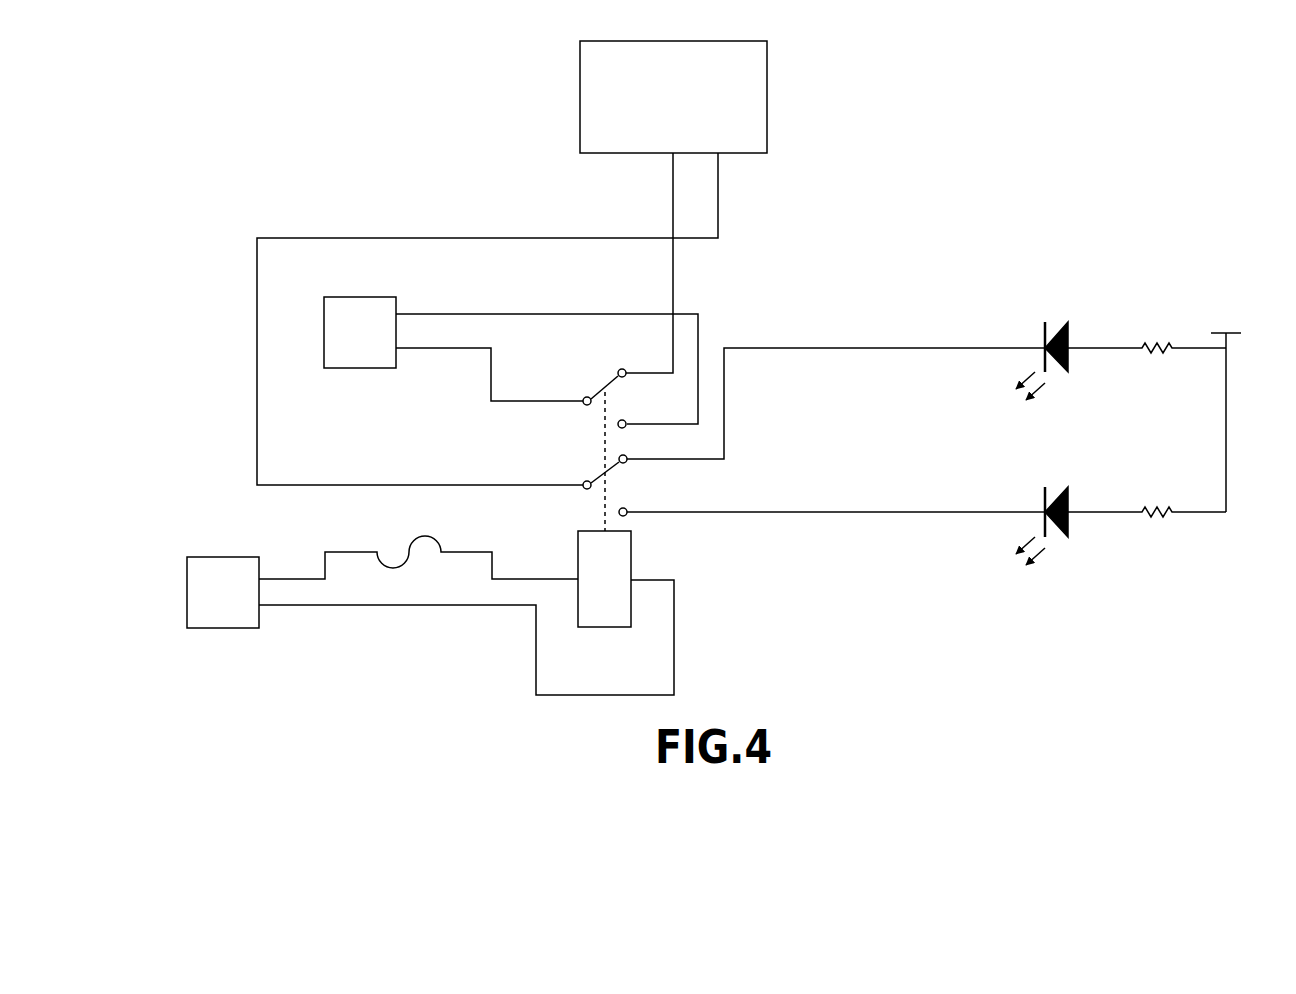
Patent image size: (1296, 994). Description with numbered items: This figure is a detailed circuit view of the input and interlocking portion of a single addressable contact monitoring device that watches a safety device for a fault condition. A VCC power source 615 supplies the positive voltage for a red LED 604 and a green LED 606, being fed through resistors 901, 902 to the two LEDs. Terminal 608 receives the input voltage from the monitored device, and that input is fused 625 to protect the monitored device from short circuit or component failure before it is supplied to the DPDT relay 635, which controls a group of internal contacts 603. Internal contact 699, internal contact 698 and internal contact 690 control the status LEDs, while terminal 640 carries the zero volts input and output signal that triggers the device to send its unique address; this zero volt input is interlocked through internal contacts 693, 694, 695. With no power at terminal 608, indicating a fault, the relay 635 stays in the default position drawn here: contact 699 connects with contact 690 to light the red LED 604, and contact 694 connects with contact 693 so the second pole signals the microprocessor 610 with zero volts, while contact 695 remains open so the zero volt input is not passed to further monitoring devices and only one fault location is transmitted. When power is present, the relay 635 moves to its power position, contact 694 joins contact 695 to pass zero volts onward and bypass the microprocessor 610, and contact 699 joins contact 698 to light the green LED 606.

The microprocessor 610 is at (580, 98).
The terminal 640 is at (324, 330).
The internal contact 5 695 is at (490, 314).
The internal contact 4 694 is at (511, 401).
The group of internal contacts 603 is at (606, 352).
The internal contact 3 693 is at (673, 262).
The internal contact 10 690 is at (724, 403).
The internal contact 9 699 is at (508, 485).
The DPDT relay 635 is at (631, 543).
The internal contact 8 698 is at (830, 513).
The terminal 608 is at (187, 590).
The fuse 625 is at (368, 562).
The red LED 604 is at (1068, 335).
The resistor 901 is at (1157, 352).
The VCC power source 615 is at (1235, 335).
The green LED 606 is at (1070, 525).
The resistor 902 is at (1160, 517).